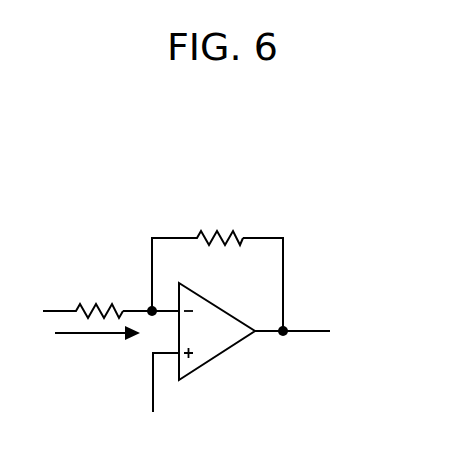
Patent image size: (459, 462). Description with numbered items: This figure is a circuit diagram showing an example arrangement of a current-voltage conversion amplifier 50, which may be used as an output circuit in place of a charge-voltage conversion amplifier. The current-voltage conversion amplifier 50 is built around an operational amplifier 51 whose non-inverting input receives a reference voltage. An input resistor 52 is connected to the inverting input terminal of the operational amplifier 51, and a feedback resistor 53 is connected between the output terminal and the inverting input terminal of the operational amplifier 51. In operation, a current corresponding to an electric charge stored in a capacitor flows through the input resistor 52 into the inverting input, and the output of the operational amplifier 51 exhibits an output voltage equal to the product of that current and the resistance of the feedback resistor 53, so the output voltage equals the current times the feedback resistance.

The current-voltage conversion amplifier 50 is at (199, 290).
The operational amplifier 51 is at (232, 348).
The input resistor 52 is at (97, 300).
The feedback resistor 53 is at (222, 229).